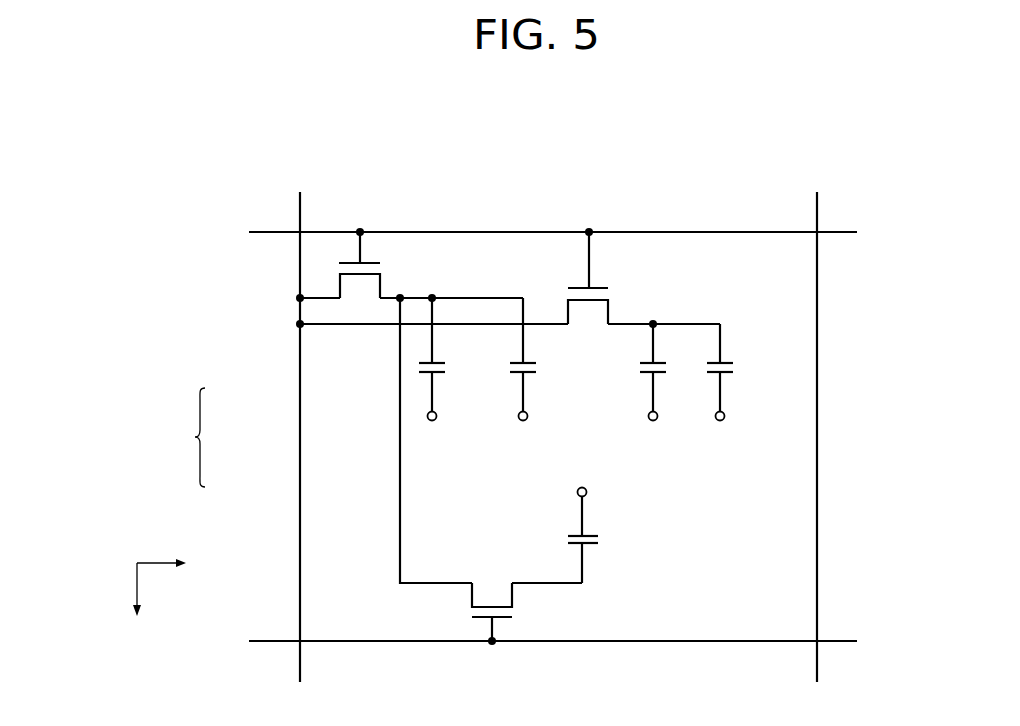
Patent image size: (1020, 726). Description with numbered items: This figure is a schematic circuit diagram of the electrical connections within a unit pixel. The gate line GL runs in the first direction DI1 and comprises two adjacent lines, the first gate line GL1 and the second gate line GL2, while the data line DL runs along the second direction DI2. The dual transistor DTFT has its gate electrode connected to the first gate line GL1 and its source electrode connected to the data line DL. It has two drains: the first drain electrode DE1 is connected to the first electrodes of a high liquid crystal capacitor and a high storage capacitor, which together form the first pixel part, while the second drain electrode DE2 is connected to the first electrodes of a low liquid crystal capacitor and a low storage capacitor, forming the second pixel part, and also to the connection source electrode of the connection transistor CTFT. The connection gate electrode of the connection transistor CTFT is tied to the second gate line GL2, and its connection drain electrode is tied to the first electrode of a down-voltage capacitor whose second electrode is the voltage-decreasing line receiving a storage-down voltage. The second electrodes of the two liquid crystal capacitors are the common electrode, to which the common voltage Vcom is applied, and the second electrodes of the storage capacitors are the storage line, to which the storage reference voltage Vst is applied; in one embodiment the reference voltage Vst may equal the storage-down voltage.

The data line DL is at (300, 205).
The first gate line GL1 is at (274, 232).
The second gate line GL2 is at (273, 641).
The gate line GL is at (187, 437).
The dual transistor DTFT is at (405, 288).
The second drain electrode DE2 is at (469, 297).
The first drain electrode DE1 is at (697, 323).
The storage reference voltage Vst is at (545, 433).
The common voltage Vcom is at (624, 433).
The connection transistor CTFT is at (521, 597).
The first direction DI1 is at (183, 560).
The second direction DI2 is at (138, 603).